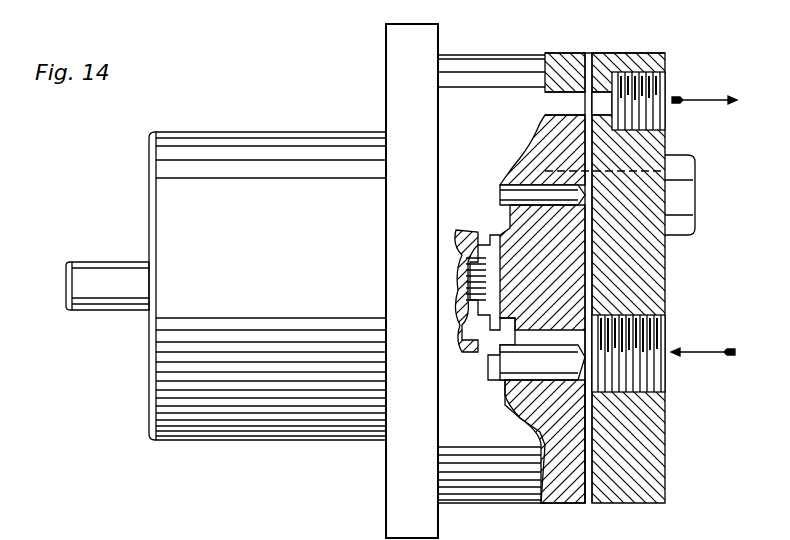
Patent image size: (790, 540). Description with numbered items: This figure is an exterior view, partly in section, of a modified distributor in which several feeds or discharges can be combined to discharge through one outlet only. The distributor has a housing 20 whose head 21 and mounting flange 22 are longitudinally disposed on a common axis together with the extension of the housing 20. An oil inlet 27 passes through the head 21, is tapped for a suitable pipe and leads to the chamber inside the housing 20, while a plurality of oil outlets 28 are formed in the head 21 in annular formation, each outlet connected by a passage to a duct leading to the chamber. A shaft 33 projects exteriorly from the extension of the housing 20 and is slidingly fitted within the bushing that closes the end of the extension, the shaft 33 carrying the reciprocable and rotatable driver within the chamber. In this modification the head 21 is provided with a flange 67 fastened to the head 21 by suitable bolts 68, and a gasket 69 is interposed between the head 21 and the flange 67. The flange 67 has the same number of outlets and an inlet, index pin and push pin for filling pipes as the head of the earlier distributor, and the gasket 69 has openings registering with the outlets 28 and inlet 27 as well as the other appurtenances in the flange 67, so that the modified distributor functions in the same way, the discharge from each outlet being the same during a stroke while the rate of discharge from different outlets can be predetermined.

The housing 20 is at (386, 130).
The head 21 is at (478, 55).
The mounting flange 22 is at (396, 50).
The oil inlet 27 is at (660, 330).
The oil outlets 28 is at (660, 82).
The shaft 33 is at (108, 275).
The flange 67 is at (622, 495).
The bolts 68 is at (688, 176).
The gasket 69 is at (589, 503).